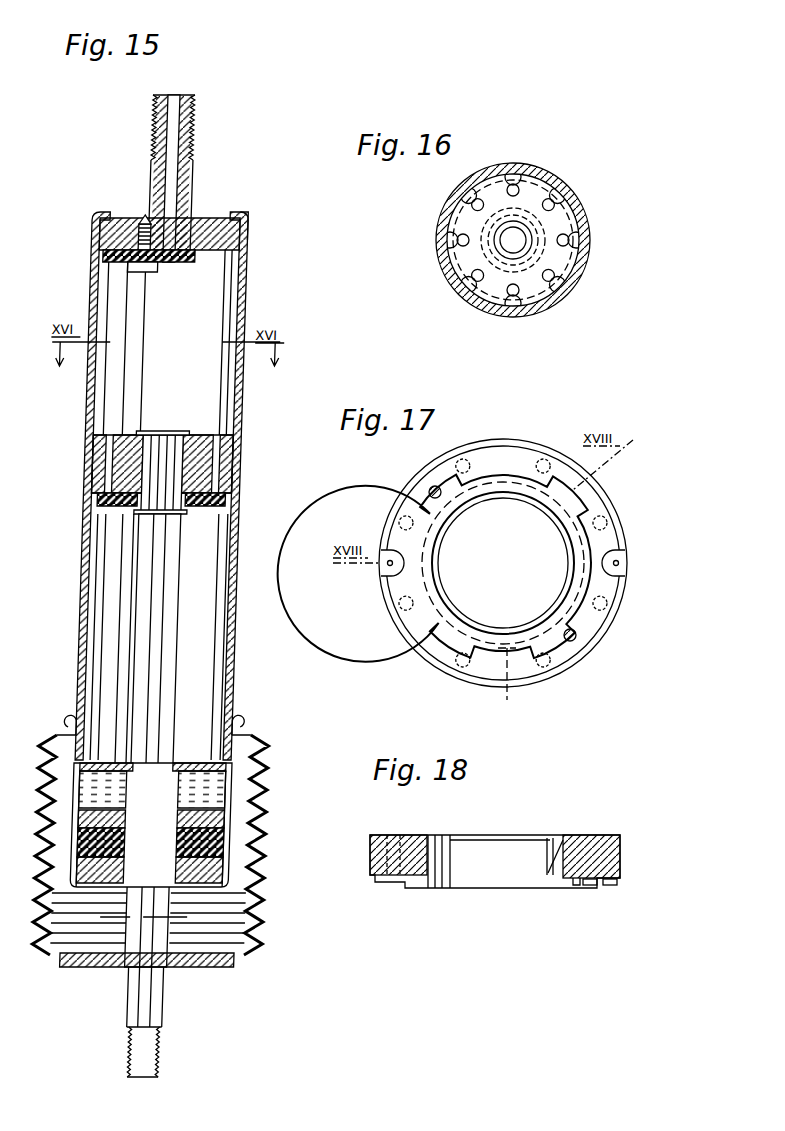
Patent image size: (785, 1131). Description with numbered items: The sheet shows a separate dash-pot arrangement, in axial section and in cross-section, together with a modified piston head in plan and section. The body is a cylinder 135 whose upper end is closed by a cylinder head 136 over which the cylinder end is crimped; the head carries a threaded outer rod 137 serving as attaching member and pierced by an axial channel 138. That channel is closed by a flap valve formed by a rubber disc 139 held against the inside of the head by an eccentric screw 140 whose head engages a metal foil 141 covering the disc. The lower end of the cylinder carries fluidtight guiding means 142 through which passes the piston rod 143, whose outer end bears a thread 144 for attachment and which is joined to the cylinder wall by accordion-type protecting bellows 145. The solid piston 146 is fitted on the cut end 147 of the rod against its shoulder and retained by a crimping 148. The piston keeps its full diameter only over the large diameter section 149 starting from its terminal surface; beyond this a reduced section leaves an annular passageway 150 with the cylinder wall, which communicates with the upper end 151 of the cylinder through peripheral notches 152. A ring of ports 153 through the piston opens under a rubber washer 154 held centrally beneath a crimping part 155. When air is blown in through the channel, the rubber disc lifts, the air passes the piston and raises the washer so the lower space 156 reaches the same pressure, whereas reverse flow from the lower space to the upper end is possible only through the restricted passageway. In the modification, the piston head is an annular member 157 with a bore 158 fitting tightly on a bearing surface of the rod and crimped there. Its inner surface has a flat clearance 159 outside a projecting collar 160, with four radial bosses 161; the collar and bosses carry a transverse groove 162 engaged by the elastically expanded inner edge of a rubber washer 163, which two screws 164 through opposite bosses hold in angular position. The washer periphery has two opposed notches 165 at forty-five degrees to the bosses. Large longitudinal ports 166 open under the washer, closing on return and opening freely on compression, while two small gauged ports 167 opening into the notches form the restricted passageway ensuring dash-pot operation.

In FIG. 15, the cylinder 135 is at (251, 295).
In FIG. 16, the cylinder 135 is at (522, 165).
In FIG. 15, the cylinder head 136 is at (207, 222).
In FIG. 15, the outer rod 137 is at (189, 172).
In FIG. 15, the axial bore or channel 138 is at (180, 107).
In FIG. 15, the rubber disc 139 is at (169, 262).
In FIG. 15, the eccentric screw 140 is at (146, 270).
In FIG. 15, the metal foil 141 is at (175, 262).
In FIG. 15, the fluidtight guiding means 142 is at (275, 810).
In FIG. 15, the piston rod 143 is at (194, 613).
In FIG. 15, the thread 144 is at (183, 1052).
In FIG. 15, the bellows 145 is at (288, 893).
In FIG. 15, the piston 146 is at (208, 445).
In FIG. 16, the piston 146 is at (592, 262).
In FIG. 15, the end of the piston rod 147 is at (188, 435).
In FIG. 15, the crimping 148 is at (178, 450).
In FIG. 16, the crimping 148 is at (500, 244).
In FIG. 15, the large diameter section 149 is at (256, 447).
In FIG. 15, the annular passageway 150 is at (255, 477).
In FIG. 15, the upper end of the cylinder 151 is at (245, 273).
In FIG. 16, the peripheral notches 152 is at (580, 225).
In FIG. 15, the ports 153 is at (124, 445).
In FIG. 16, the ports 153 is at (456, 205).
In FIG. 15, the rubber washer 154 is at (245, 507).
In FIG. 15, the crimping part 155 is at (207, 515).
In FIG. 15, the lower space of the cylinder 156 is at (236, 687).
In FIG. 17, the annular member 157 is at (628, 563).
In FIG. 18, the annular member 157 is at (568, 843).
In FIG. 17, the bore 158 is at (568, 550).
In FIG. 18, the bore 158 is at (555, 873).
In FIG. 17, the flat clearance 159 is at (630, 557).
In FIG. 18, the flat clearance 159 is at (612, 887).
In FIG. 18, the projecting collar 160 is at (583, 890).
In FIG. 17, the radial bosses 161 is at (438, 653).
In FIG. 17, the transverse groove 162 is at (507, 690).
In FIG. 18, the transverse groove 162 is at (567, 890).
In FIG. 17, the rubber washer 163 is at (613, 603).
In FIG. 18, the rubber washer 163 is at (613, 890).
In FIG. 17, the screws 164 is at (567, 648).
In FIG. 17, the notches 165 is at (382, 577).
In FIG. 17, the longitudinal ports 166 is at (392, 618).
In FIG. 18, the longitudinal ports 166 is at (613, 837).
In FIG. 17, the gauged ports 167 is at (382, 567).